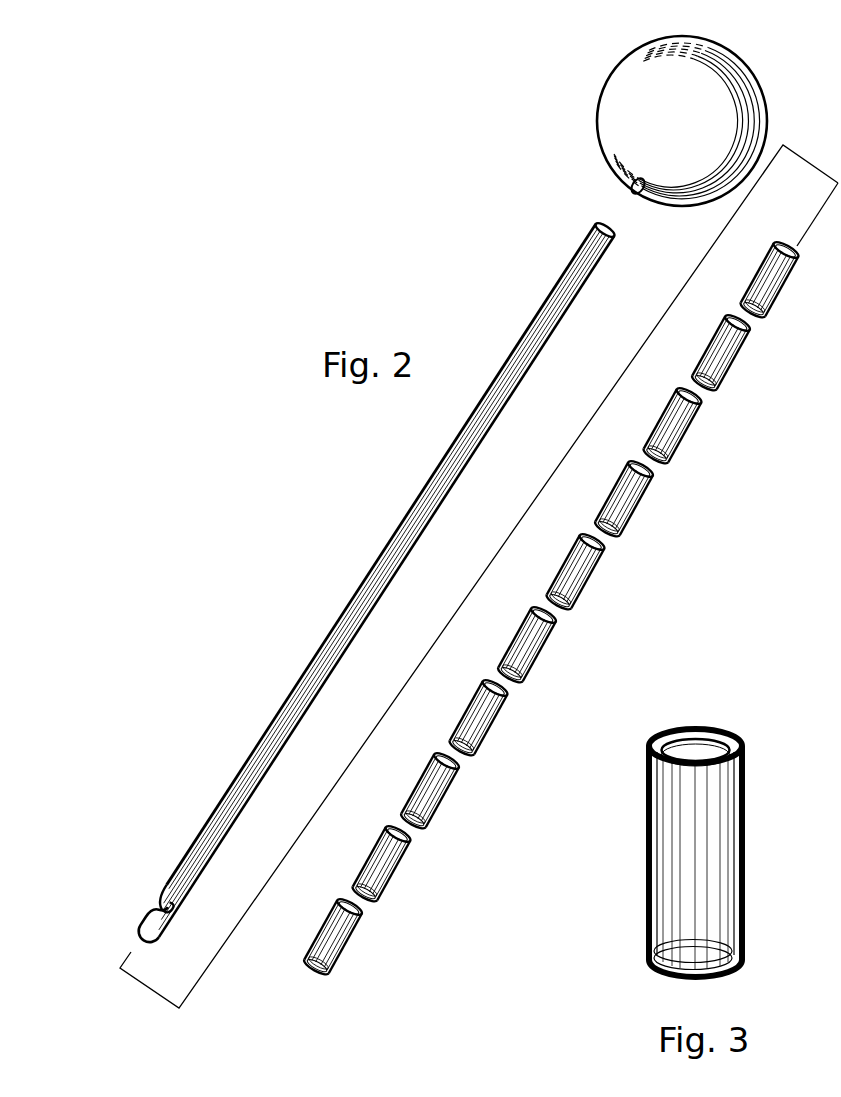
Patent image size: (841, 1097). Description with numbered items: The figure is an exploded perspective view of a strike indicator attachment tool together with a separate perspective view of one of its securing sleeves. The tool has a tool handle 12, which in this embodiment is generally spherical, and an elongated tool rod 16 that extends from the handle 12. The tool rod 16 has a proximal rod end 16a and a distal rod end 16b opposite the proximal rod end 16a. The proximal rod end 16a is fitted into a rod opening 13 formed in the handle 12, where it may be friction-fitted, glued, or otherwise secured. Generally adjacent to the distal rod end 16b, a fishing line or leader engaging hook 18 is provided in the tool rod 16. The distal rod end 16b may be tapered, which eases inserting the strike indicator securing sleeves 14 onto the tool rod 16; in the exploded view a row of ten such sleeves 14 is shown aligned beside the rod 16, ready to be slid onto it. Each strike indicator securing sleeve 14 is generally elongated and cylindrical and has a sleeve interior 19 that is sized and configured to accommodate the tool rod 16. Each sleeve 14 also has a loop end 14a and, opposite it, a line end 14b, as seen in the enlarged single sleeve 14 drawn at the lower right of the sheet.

In FIG. 2, the tool handle 12 is at (623, 100).
In FIG. 2, the rod opening 13 is at (628, 185).
In FIG. 2, the strike indicator securing sleeve 14 is at (630, 518).
In FIG. 3, the strike indicator securing sleeve 14 is at (669, 848).
In FIG. 3, the loop end 14a is at (677, 730).
In FIG. 3, the line end 14b is at (670, 981).
In FIG. 2, the tool rod 16 is at (362, 576).
In FIG. 2, the proximal rod end 16a is at (614, 240).
In FIG. 2, the distal rod end 16b is at (136, 946).
In FIG. 2, the fishing line or leader engaging hook 18 is at (155, 908).
In FIG. 3, the sleeve interior 19 is at (687, 748).